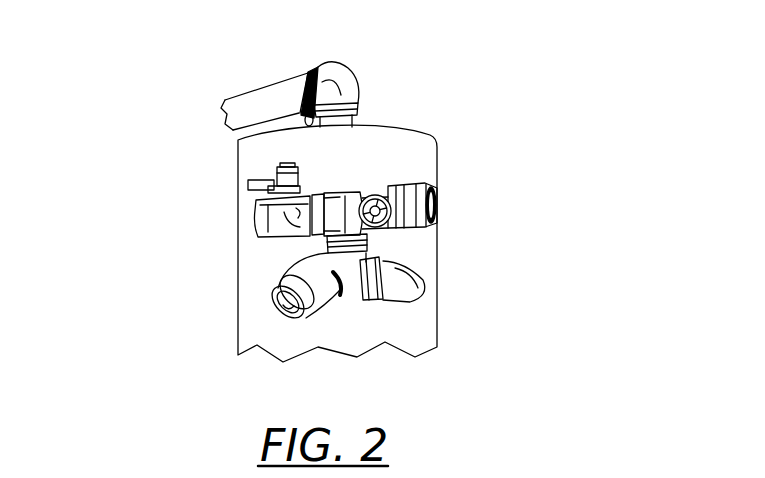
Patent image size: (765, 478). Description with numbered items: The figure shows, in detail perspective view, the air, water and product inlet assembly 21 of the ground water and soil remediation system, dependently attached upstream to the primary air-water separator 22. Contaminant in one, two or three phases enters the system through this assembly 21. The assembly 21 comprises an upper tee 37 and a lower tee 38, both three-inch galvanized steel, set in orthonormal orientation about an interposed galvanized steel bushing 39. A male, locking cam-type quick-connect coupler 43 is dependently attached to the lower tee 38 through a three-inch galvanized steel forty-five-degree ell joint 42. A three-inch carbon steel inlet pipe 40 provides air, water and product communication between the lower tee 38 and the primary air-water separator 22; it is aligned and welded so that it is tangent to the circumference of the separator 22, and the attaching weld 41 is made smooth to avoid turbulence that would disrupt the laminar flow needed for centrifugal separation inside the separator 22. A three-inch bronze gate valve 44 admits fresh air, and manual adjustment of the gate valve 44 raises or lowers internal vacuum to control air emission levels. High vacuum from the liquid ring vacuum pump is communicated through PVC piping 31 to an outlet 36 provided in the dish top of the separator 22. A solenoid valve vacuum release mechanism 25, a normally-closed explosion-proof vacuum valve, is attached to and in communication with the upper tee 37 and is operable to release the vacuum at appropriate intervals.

The air, water and product inlet assembly 21 is at (186, 198).
The primary air-water separator 22 is at (410, 162).
The solenoid valve vacuum release mechanism 25 is at (247, 185).
The PVC piping 31 is at (268, 102).
The outlet 36 is at (335, 118).
The upper tee 37 is at (340, 200).
The lower tee 38 is at (363, 290).
The bushing 39 is at (367, 245).
The inlet pipe 40 is at (400, 292).
The attaching weld 41 is at (415, 272).
The 45-degree ell joint 42 is at (293, 257).
The quick-connect coupler 43 is at (273, 300).
The bronze gate valve 44 is at (423, 186).